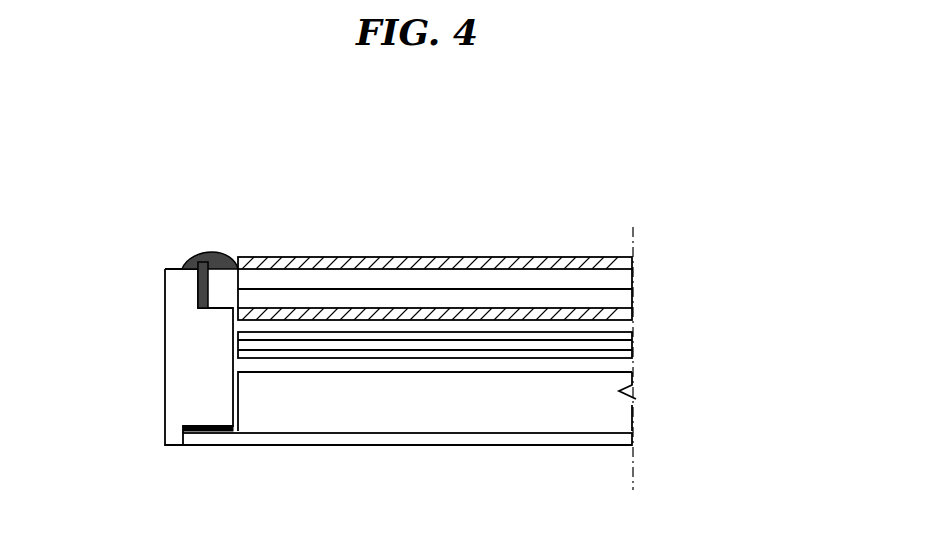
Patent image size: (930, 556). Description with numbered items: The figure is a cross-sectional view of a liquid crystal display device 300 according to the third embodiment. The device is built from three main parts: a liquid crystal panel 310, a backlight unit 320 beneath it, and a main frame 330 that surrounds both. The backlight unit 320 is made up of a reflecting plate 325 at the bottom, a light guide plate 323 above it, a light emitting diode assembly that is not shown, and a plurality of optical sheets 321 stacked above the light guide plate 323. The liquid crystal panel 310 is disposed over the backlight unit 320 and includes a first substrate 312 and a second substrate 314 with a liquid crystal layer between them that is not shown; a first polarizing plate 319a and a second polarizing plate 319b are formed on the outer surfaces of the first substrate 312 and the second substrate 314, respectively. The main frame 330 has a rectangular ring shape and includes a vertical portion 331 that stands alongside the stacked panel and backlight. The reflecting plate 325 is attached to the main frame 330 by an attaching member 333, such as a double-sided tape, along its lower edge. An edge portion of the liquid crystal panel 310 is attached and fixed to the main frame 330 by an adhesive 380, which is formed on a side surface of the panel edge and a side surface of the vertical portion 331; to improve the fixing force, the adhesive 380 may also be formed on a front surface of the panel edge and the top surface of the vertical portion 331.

The liquid crystal display device 300 is at (347, 136).
The liquid crystal panel 310 is at (440, 190).
The first substrate 312 is at (470, 298).
The second substrate 314 is at (423, 282).
The first polarizing plate 319a is at (582, 312).
The second polarizing plate 319b is at (532, 267).
The backlight unit 320 is at (730, 350).
The optical sheets 321 is at (633, 352).
The light guide plate 323 is at (635, 401).
The reflecting plate 325 is at (633, 438).
The main frame 330 is at (165, 332).
The vertical portion 331 is at (172, 387).
The attaching member 333 is at (213, 433).
The adhesive 380 is at (184, 261).